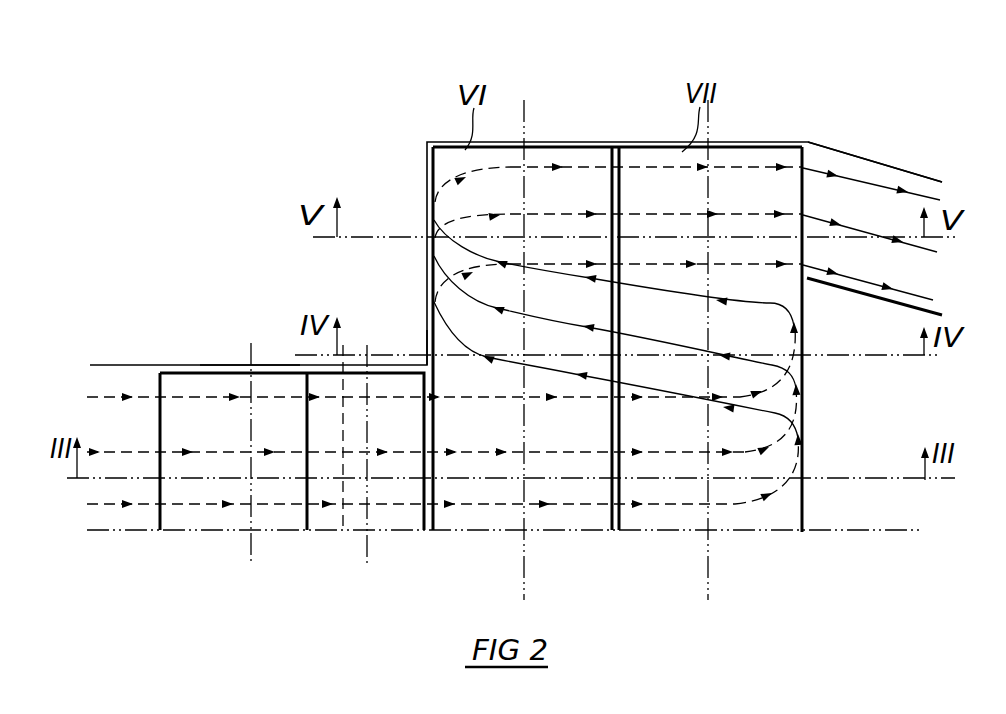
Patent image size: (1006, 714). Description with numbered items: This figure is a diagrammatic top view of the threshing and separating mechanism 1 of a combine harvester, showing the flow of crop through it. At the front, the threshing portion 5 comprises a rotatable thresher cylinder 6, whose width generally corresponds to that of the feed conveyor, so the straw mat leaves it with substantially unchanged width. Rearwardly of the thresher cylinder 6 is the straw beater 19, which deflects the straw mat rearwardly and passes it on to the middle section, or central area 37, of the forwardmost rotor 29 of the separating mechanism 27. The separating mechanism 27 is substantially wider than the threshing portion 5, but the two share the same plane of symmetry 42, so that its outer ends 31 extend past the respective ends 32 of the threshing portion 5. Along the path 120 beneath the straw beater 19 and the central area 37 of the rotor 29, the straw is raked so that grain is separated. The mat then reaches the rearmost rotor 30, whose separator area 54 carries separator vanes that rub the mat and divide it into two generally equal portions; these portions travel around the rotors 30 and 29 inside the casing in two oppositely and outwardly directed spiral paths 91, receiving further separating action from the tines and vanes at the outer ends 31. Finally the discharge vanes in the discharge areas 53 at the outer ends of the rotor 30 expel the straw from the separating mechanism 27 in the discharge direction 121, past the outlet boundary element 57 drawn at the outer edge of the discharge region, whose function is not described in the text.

The mechanism 1 is at (398, 165).
The threshing portion 5 is at (199, 350).
The thresher cylinder 6 is at (158, 513).
The straw beater 19 is at (305, 513).
The separating mechanism 27 is at (637, 125).
The rotor 29 is at (427, 343).
The rotor 30 is at (803, 445).
The outer ends 31 is at (557, 143).
The ends 32 is at (232, 365).
The central area 37 is at (433, 493).
The plane of symmetry 42 is at (838, 532).
The discharge area 53 is at (803, 190).
The separator area 54 is at (803, 372).
The outlet guide wall 57 is at (848, 155).
The spiral paths 91 is at (786, 303).
The path 120 is at (105, 395).
The direction 121 is at (742, 168).